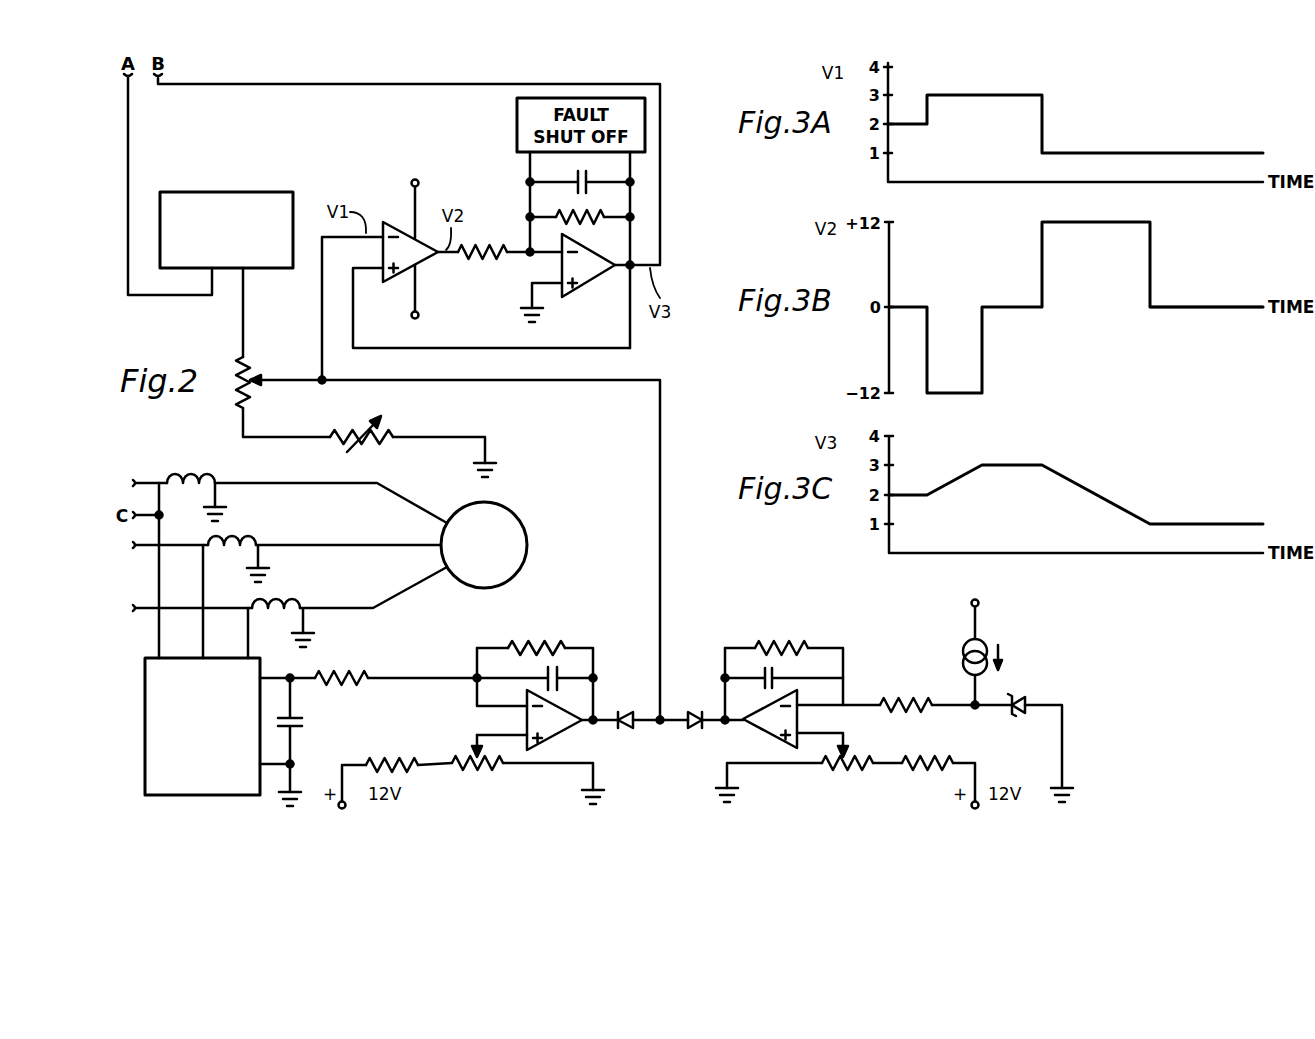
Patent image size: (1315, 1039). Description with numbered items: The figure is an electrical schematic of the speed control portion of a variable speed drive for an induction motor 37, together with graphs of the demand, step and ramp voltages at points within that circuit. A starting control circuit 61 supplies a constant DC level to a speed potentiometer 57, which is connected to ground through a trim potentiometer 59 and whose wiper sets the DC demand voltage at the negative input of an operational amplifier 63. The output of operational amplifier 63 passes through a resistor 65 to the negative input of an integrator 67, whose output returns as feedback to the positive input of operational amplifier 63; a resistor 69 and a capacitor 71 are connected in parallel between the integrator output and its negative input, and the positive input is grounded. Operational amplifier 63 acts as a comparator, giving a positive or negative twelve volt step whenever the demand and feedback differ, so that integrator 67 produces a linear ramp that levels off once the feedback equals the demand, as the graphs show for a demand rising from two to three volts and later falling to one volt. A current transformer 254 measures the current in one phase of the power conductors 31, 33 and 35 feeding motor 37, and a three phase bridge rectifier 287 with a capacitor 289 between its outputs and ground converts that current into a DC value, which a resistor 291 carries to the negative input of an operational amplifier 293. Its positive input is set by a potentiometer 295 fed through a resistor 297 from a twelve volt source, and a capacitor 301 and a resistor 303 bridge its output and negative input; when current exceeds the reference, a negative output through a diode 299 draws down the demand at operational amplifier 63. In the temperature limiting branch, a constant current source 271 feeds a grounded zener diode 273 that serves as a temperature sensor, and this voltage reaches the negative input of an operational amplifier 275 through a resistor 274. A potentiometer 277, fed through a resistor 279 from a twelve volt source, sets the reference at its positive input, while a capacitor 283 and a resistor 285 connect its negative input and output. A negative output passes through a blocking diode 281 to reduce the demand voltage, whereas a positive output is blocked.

The power conductor 31 is at (358, 607).
The power conductor 33 is at (330, 545).
The power conductor 35 is at (337, 483).
The motor 37 is at (527, 545).
The potentiometer 57 is at (254, 366).
The trim potentiometer 59 is at (362, 430).
The starting control circuit 61 is at (212, 192).
The operational amplifier 63 is at (398, 275).
The resistor 65 is at (497, 270).
The integrator 67 is at (594, 280).
The resistor 69 is at (581, 213).
The capacitor 71 is at (578, 178).
The current transformer 254 is at (195, 481).
The constant current source 271 is at (987, 637).
The zener diode 273 is at (1022, 701).
The resistor 274 is at (905, 692).
The operational amplifier 275 is at (765, 734).
The potentiometer 277 is at (836, 770).
The resistor 279 is at (920, 760).
The diode 281 is at (695, 712).
The capacitor 283 is at (778, 676).
The resistor 285 is at (780, 643).
The rectifier 287 is at (211, 675).
The capacitor 289 is at (300, 713).
The resistor 291 is at (340, 673).
The operational amplifier 293 is at (527, 713).
The potentiometer 295 is at (478, 768).
The resistor 297 is at (396, 760).
The diode 299 is at (612, 724).
The capacitor 301 is at (546, 676).
The resistor 303 is at (535, 645).